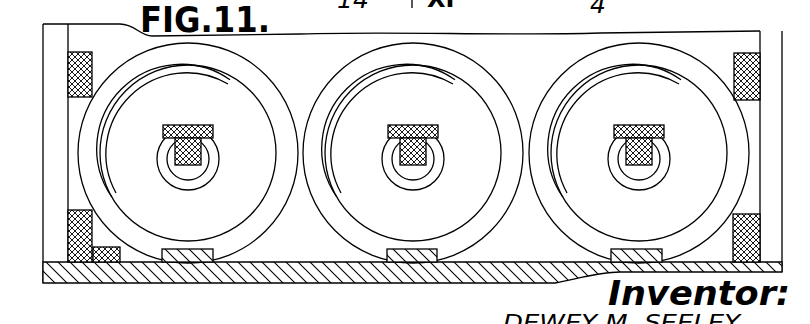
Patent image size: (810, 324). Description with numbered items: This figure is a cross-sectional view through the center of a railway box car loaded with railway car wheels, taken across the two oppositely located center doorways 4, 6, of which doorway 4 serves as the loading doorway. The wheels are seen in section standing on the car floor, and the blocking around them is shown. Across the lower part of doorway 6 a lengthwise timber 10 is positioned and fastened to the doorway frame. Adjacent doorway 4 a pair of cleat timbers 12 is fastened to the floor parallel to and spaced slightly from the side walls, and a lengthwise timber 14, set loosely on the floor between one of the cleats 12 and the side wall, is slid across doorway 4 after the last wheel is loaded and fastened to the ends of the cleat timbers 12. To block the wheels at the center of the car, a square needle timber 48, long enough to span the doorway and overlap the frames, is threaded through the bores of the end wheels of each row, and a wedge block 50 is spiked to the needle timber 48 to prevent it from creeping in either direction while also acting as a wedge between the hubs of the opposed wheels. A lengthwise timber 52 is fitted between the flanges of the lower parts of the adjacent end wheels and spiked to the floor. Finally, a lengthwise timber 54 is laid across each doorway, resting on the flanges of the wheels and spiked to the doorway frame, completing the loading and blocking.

The doorway 4 is at (44, 137).
The doorway 6 is at (773, 134).
The lengthwise timber 10 is at (735, 250).
The cleat timbers 12 is at (103, 252).
The lengthwise timber 14 is at (81, 250).
The needle timber 48 is at (166, 159).
The wedge block 50 is at (188, 126).
The lengthwise timber 52 is at (194, 250).
The lengthwise timber 54 is at (80, 60).